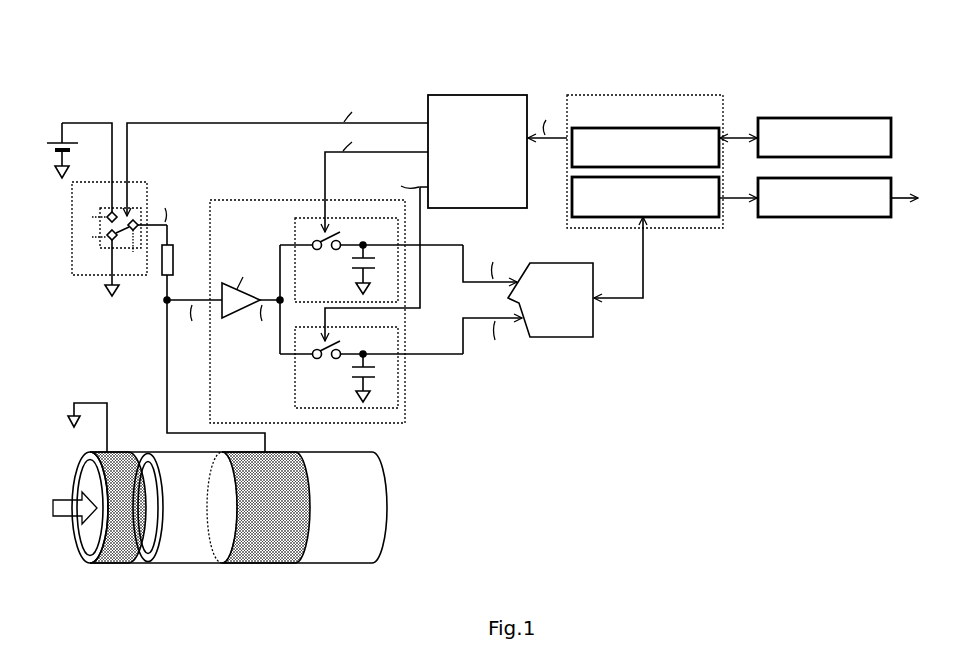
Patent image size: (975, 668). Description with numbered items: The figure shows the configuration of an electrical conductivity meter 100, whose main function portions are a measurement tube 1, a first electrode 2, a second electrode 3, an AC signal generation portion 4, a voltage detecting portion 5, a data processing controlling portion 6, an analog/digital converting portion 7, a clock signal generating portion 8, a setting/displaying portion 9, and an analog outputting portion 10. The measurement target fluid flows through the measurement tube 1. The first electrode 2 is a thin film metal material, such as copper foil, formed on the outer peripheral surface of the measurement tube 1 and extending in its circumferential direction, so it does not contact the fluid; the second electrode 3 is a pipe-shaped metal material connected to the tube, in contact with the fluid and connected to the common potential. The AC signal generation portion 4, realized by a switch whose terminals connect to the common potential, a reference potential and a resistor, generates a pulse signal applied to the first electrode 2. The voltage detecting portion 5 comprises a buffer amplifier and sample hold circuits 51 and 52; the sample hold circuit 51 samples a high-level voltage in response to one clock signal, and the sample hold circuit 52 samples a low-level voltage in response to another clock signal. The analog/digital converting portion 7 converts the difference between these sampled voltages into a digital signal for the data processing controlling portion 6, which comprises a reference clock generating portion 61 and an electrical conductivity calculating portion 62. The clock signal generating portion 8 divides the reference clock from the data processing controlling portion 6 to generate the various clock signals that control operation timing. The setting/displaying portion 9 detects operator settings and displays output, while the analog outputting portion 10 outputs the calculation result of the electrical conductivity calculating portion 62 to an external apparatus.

The electrical conductivity meter 100 is at (893, 63).
The measurement tube 1 is at (374, 451).
The first electrode 2 is at (263, 563).
The second electrode 3 is at (107, 563).
The AC signal generation portion 4 is at (149, 181).
The voltage detecting portion 5 is at (224, 199).
The sample hold circuit 51 is at (294, 227).
The sample hold circuit 52 is at (294, 387).
The data processing controlling portion 6 is at (647, 95).
The reference clock generating portion 61 is at (571, 147).
The electrical conductivity calculating portion 62 is at (571, 197).
The analog/digital converting portion 7 is at (560, 338).
The clock signal generating portion 8 is at (486, 95).
The setting/displaying portion 9 is at (826, 118).
The analog outputting portion 10 is at (824, 178).